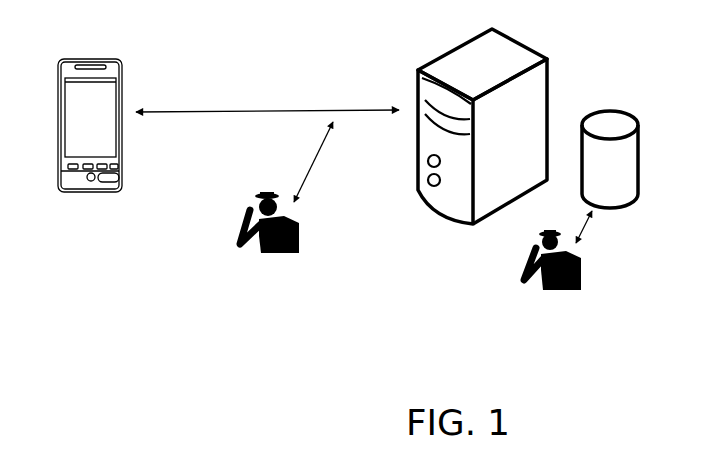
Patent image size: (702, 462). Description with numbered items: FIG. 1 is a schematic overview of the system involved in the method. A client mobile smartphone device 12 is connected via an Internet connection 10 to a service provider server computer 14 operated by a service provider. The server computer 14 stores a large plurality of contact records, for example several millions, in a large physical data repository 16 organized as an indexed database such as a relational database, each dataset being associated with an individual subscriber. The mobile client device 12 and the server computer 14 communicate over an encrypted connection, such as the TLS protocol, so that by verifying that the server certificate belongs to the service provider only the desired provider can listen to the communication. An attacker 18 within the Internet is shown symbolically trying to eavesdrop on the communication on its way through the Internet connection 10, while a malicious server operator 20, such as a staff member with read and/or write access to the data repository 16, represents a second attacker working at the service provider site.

The Internet connection 10 is at (248, 103).
The mobile client device 12 is at (108, 182).
The service provider server computer 14 is at (447, 191).
The data repository 16 is at (610, 180).
The attacker within the Internet 18 is at (230, 220).
The malicious server operator 20 is at (506, 264).